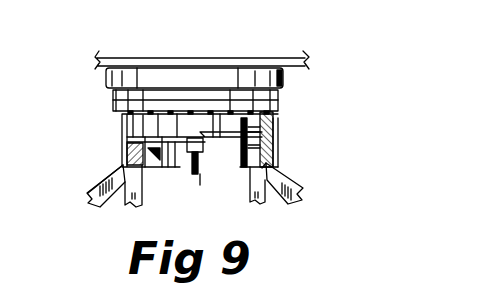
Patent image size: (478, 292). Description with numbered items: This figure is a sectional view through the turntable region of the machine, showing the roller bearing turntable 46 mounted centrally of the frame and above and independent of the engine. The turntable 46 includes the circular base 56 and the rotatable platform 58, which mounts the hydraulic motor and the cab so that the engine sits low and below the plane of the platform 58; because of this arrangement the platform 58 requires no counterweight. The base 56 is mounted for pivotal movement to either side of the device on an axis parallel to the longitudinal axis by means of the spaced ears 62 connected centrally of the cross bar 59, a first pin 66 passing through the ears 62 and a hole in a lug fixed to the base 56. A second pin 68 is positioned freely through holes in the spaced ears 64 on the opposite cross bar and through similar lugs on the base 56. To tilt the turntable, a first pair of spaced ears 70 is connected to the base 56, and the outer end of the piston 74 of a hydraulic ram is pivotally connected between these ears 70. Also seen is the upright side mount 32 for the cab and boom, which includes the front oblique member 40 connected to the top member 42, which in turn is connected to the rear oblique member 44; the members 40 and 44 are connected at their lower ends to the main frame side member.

The rotatable platform 58 is at (278, 57).
The roller bearing turntable 46 is at (74, 78).
The first pin 66 is at (268, 124).
The second pin 68 is at (122, 128).
The spaced ears 64 is at (104, 144).
The first pair of spaced ears 70 is at (235, 170).
The spaced ears 62 is at (273, 143).
The side mount 32 is at (90, 168).
The front oblique member 40 is at (95, 179).
The circular base 56 is at (158, 168).
The rear oblique member 44 is at (275, 196).
The top member 42 is at (204, 181).
The cross bar 59 is at (283, 167).
The piston 74 is at (199, 190).